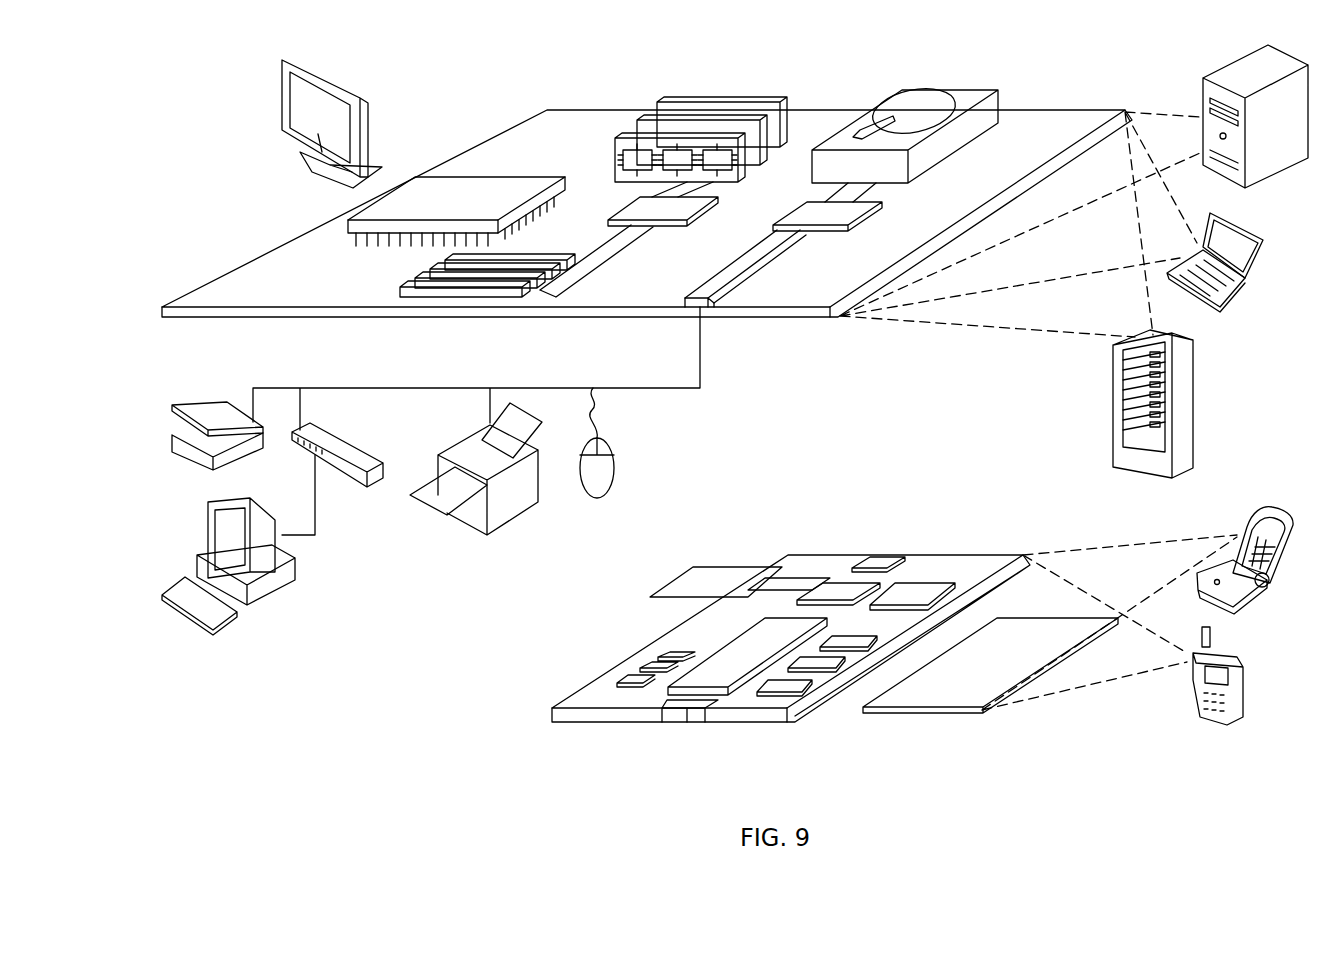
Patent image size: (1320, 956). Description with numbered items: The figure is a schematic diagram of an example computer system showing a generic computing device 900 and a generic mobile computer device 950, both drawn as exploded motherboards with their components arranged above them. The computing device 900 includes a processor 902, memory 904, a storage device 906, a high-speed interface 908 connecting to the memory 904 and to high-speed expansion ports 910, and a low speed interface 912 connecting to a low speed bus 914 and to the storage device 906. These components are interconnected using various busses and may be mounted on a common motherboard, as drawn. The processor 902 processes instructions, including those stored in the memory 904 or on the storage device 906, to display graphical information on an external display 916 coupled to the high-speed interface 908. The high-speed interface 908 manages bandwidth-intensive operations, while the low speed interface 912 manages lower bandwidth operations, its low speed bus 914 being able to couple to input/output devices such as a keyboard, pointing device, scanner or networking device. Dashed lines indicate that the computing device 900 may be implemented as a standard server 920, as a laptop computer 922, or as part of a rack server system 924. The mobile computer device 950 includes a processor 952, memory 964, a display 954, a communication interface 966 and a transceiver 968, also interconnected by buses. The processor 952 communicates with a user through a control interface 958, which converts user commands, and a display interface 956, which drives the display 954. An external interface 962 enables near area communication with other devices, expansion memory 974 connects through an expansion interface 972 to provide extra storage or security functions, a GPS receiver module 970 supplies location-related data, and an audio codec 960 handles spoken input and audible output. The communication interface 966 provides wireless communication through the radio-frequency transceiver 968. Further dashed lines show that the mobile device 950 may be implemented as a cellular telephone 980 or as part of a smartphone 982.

The computing device 900 is at (476, 84).
The processor 902 is at (345, 223).
The memory 904 is at (680, 137).
The storage device 906 is at (902, 92).
The high-speed interface 908 is at (640, 212).
The high-speed expansion ports 910 is at (412, 280).
The low speed interface 912 is at (810, 205).
The low speed bus 914 is at (708, 300).
The display 916 is at (284, 58).
The standard server 920 is at (1203, 94).
The laptop computer 922 is at (1263, 242).
The rack server system 924 is at (1113, 428).
The mobile computer device 950 is at (527, 733).
The processor 952 is at (722, 677).
The display 954 is at (952, 695).
The display interface 956 is at (788, 687).
The control interface 958 is at (820, 667).
The audio codec 960 is at (845, 645).
The external interface 962 is at (688, 713).
The memory 964 is at (637, 668).
The communication interface 966 is at (838, 588).
The transceiver 968 is at (913, 590).
The GPS receiver module 970 is at (887, 553).
The expansion interface 972 is at (770, 563).
The expansion memory 974 is at (700, 567).
The cellular telephone 980 is at (1254, 520).
The smartphone 982 is at (1193, 685).